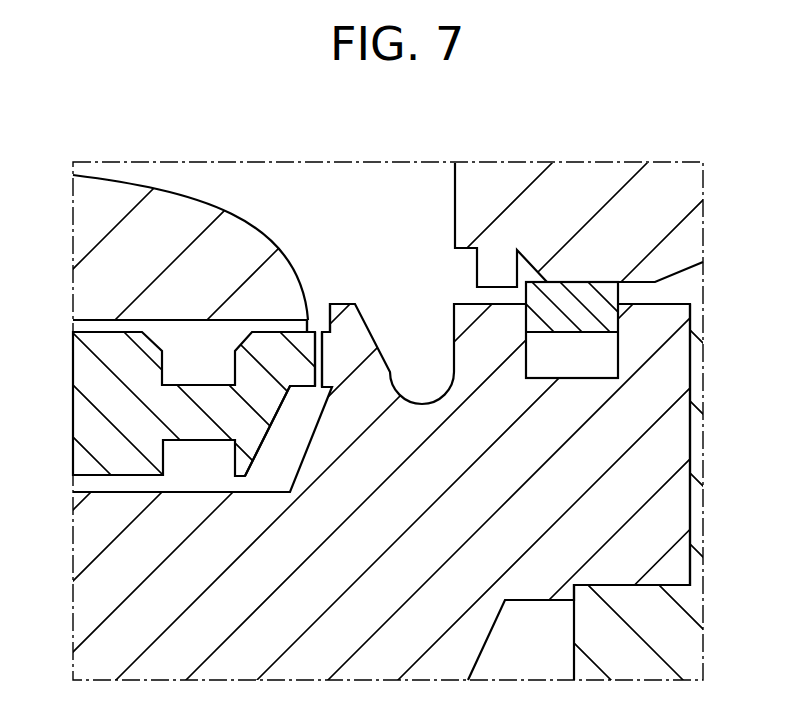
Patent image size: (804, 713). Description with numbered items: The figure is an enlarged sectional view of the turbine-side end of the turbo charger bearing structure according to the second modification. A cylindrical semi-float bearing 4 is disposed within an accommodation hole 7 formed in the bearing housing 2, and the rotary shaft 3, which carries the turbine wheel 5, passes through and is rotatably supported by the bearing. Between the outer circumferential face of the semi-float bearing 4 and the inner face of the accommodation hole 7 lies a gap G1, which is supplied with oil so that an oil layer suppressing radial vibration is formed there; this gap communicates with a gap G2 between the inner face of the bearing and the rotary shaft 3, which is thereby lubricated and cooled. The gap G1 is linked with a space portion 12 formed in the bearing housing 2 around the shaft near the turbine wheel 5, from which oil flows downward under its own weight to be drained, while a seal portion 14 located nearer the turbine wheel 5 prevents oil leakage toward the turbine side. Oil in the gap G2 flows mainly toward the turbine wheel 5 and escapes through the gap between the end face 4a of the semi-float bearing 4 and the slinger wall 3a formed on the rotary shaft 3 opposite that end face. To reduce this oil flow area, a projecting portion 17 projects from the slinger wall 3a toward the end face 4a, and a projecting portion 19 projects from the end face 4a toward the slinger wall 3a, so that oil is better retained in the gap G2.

The bearing housing 2 is at (83, 212).
The rotary shaft 3 is at (83, 615).
The slinger wall 3a is at (325, 305).
The semi-float bearing 4 is at (83, 417).
The end face 4a is at (292, 390).
The turbine wheel 5 is at (698, 425).
The accommodation hole 7 is at (82, 325).
The space portion 12 is at (328, 182).
The seal portion 14 is at (597, 282).
The projecting portion 17 is at (328, 353).
The projecting portion 19 is at (310, 342).
The gap G1 is at (123, 325).
The gap G2 is at (108, 486).